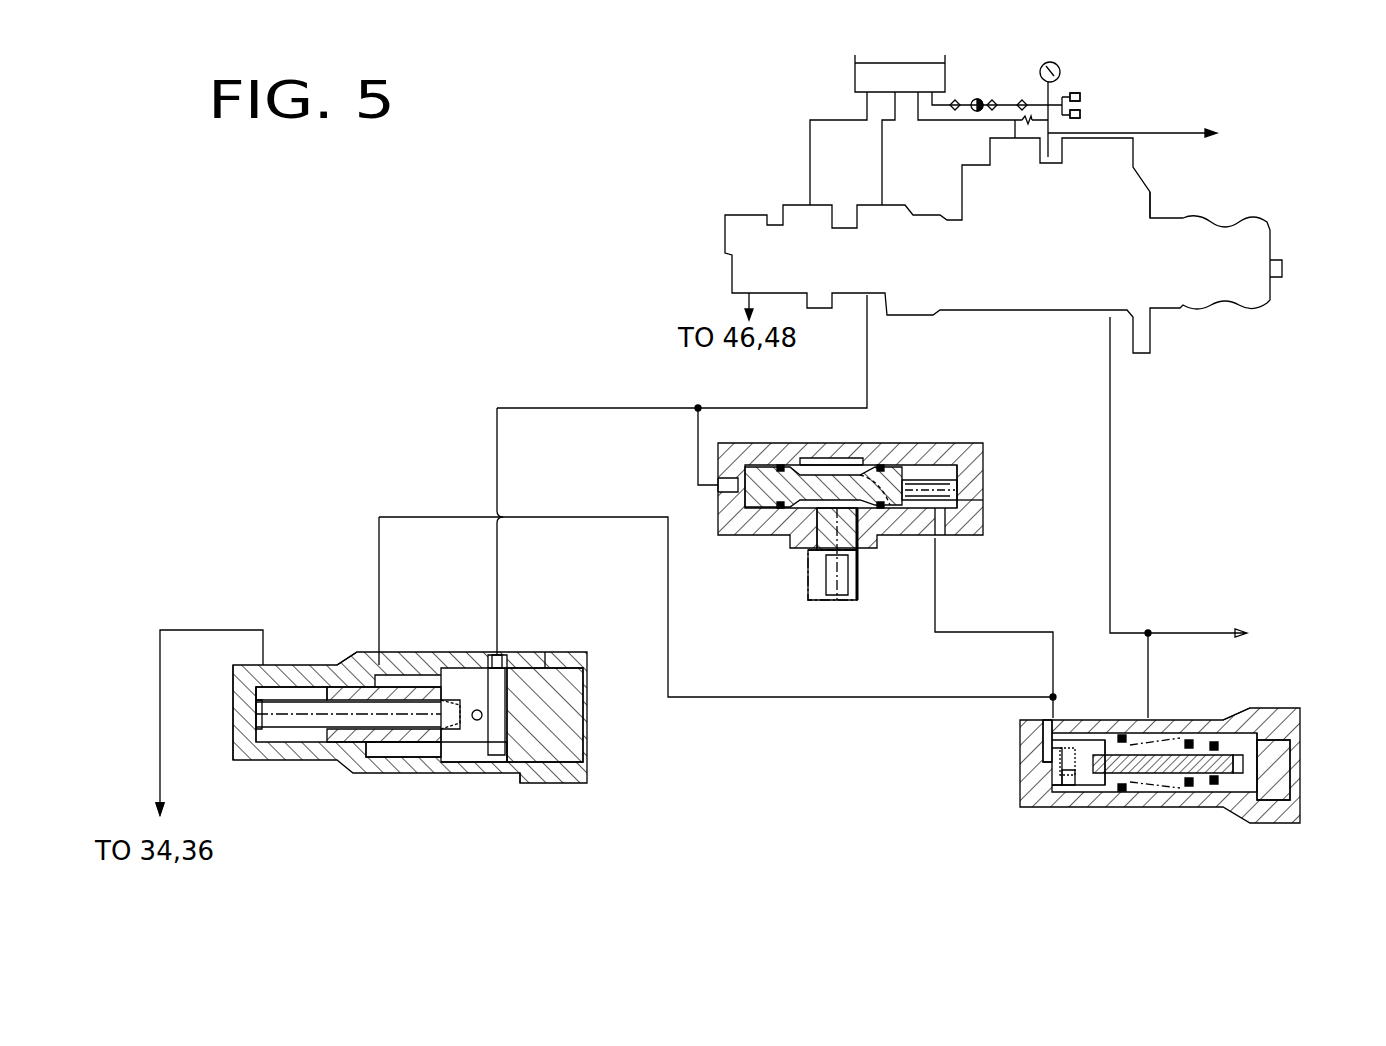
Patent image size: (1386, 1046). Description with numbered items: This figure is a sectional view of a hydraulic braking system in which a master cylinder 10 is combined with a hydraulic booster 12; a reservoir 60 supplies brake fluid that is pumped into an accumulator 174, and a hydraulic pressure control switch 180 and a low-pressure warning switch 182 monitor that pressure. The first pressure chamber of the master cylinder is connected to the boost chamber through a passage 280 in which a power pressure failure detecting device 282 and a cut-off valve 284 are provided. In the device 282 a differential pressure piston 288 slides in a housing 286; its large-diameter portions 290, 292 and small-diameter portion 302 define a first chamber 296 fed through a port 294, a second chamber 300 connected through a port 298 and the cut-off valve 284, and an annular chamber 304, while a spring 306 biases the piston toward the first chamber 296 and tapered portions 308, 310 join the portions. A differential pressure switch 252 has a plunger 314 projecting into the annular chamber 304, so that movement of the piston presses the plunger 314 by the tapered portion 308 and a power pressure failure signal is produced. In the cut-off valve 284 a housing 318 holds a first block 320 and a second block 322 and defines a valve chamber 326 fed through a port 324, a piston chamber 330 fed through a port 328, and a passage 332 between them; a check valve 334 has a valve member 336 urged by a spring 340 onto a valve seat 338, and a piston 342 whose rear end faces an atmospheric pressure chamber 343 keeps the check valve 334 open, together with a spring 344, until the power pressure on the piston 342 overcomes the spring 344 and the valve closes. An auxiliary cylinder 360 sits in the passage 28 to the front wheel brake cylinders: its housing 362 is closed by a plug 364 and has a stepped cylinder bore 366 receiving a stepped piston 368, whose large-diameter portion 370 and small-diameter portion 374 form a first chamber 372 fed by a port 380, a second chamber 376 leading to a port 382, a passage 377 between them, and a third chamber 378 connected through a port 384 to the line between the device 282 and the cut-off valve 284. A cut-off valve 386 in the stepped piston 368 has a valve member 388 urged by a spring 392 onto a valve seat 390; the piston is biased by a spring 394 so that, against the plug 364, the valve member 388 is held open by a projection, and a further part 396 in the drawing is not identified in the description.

The master cylinder 10 is at (759, 217).
The hydraulic booster 12 is at (1156, 199).
The passage 28 is at (868, 325).
The reservoir 60 is at (855, 85).
The accumulator 174 is at (1062, 84).
The hydraulic pressure control switch 180 is at (1081, 97).
The low-pressure warning switch 182 is at (1081, 114).
The differential pressure switch 252 is at (833, 592).
The passage 280 is at (985, 632).
The power pressure failure detecting device 282 is at (712, 495).
The cut-off valve 284 is at (1138, 830).
The housing 286 is at (963, 450).
The differential pressure piston 288 is at (905, 452).
The large-diameter portion 290 is at (762, 468).
The large-diameter portion 292 is at (975, 480).
The port 294 is at (718, 520).
The first chamber 296 is at (699, 440).
The port 298 is at (937, 538).
The second chamber 300 is at (975, 508).
The small-diameter portion 302 is at (876, 470).
The annular chamber 304 is at (833, 465).
The spring 306 is at (975, 492).
The tapered portion 308 is at (818, 522).
The tapered portion 310 is at (857, 552).
The plunger 314 is at (832, 560).
The housing 318 is at (1280, 735).
The first block 320 is at (1083, 735).
The second block 322 is at (1252, 718).
The port 324 is at (1043, 712).
The valve chamber 326 is at (1040, 767).
The port 328 is at (1150, 735).
The piston chamber 330 is at (1130, 800).
The passage 332 is at (1110, 790).
The check valve 334 is at (1040, 780).
The valve member 336 is at (1070, 800).
The valve seat 338 is at (1103, 735).
The spring 340 is at (1070, 718).
The piston 342 is at (1230, 812).
The atmospheric pressure chamber 343 is at (1258, 795).
The spring 344 is at (1185, 718).
The auxiliary cylinder 360 is at (355, 800).
The housing 362 is at (288, 692).
The plug 364 is at (535, 735).
The stepped cylinder bore 366 is at (294, 742).
The stepped piston 368 is at (372, 760).
The large-diameter portion 370 is at (490, 758).
The first chamber 372 is at (528, 690).
The small-diameter portion 374 is at (340, 672).
The second chamber 376 is at (258, 665).
The passage 377 is at (560, 778).
The third chamber 378 is at (410, 672).
The port 380 is at (499, 656).
The port 382 is at (255, 668).
The port 384 is at (372, 670).
The cut-off valve 386 is at (441, 760).
The valve member 388 is at (520, 768).
The valve seat 390 is at (480, 668).
The spring 392 is at (448, 762).
The spring 394 is at (262, 735).
The ball 396 is at (484, 716).